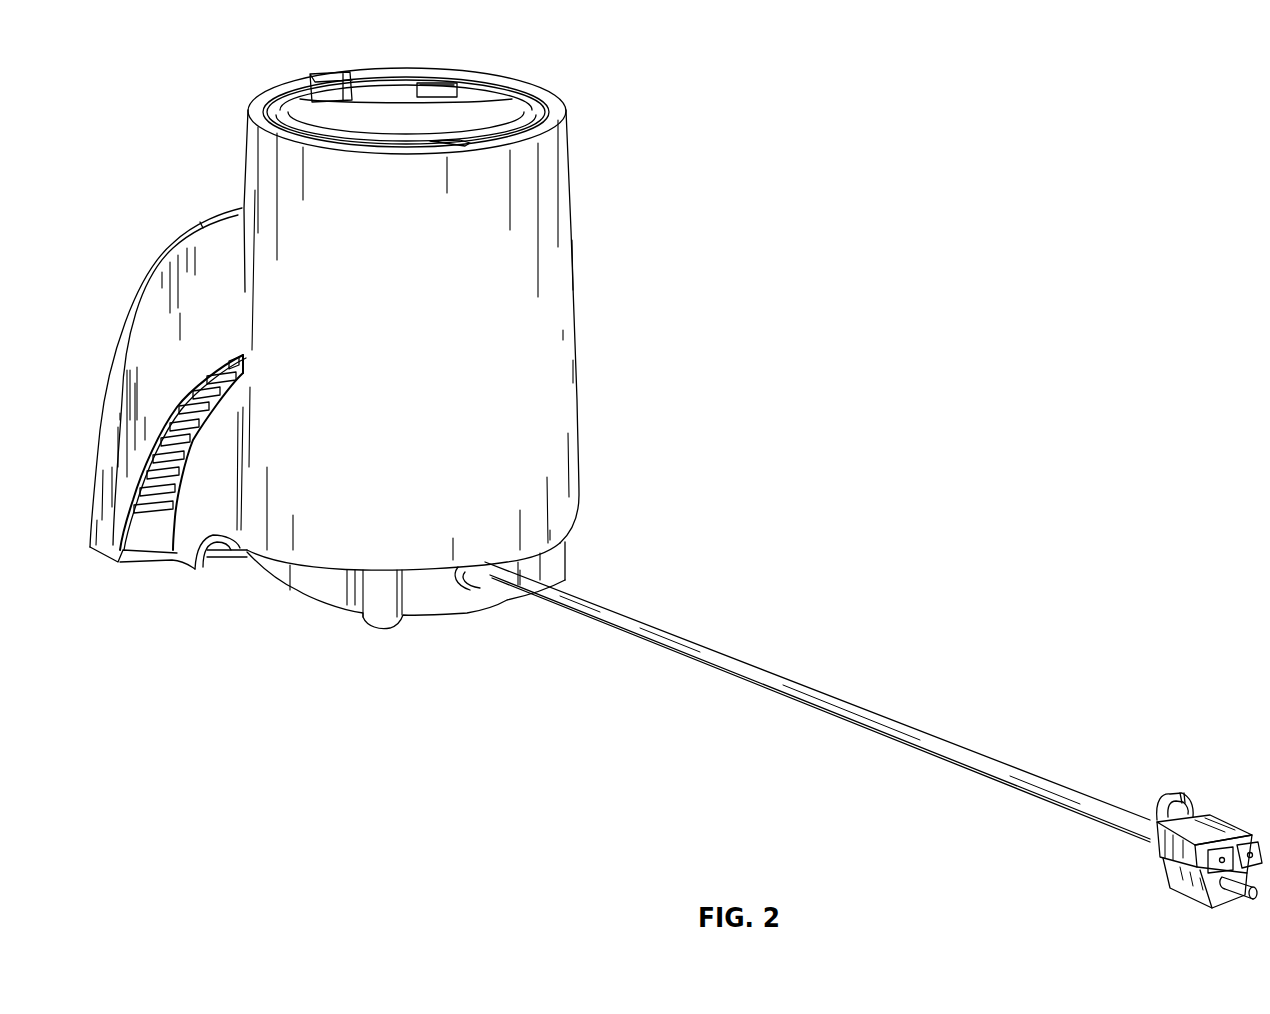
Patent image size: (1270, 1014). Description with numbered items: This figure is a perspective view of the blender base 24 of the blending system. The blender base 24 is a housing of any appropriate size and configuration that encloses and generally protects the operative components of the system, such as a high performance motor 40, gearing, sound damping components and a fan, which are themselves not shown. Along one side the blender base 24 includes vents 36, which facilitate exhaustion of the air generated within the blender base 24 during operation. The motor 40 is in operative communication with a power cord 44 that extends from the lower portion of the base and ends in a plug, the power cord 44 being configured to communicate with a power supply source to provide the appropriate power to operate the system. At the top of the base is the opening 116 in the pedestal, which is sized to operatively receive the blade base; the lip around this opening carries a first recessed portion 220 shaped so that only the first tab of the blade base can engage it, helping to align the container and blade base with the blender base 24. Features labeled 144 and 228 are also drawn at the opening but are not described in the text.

The blender base 24 is at (584, 298).
The vents 36 is at (147, 522).
The motor 40 is at (561, 569).
The power cord 44 is at (857, 708).
The opening 116 is at (413, 137).
The locking element 144 is at (460, 133).
The first recessed portion 220 is at (327, 92).
The slot 228 is at (430, 92).